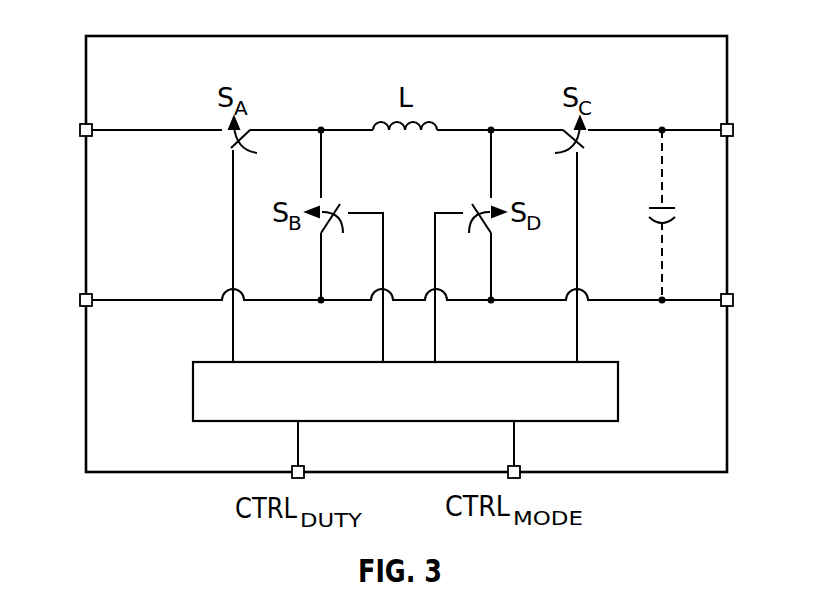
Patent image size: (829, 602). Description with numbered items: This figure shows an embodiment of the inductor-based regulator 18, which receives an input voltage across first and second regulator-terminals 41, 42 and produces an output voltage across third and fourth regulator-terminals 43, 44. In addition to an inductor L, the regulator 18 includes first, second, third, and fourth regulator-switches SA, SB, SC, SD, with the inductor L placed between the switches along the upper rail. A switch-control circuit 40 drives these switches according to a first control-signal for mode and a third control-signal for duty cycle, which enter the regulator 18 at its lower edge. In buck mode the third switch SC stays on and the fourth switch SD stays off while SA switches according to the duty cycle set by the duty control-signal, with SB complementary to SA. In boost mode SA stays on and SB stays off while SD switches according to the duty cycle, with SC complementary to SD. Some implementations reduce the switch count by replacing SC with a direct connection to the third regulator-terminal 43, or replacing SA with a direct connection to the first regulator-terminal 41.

The regulator 18 is at (140, 35).
The switch-control circuit 40 is at (193, 390).
The first regulator-terminal 41 is at (62, 133).
The second regulator-terminal 42 is at (62, 303).
The third regulator-terminal 43 is at (745, 133).
The fourth regulator-terminal 44 is at (745, 303).